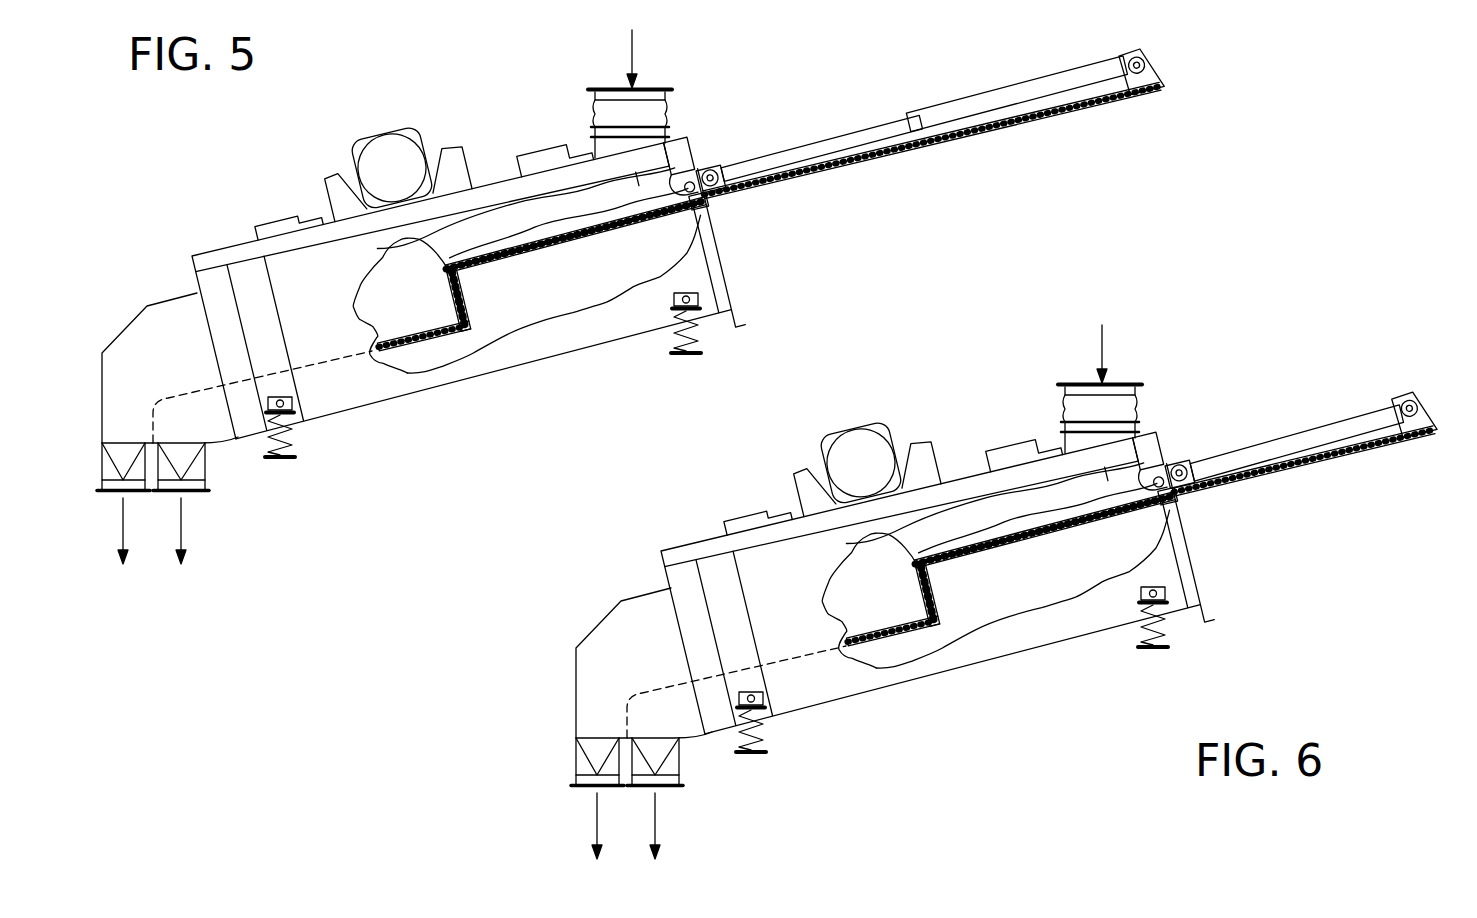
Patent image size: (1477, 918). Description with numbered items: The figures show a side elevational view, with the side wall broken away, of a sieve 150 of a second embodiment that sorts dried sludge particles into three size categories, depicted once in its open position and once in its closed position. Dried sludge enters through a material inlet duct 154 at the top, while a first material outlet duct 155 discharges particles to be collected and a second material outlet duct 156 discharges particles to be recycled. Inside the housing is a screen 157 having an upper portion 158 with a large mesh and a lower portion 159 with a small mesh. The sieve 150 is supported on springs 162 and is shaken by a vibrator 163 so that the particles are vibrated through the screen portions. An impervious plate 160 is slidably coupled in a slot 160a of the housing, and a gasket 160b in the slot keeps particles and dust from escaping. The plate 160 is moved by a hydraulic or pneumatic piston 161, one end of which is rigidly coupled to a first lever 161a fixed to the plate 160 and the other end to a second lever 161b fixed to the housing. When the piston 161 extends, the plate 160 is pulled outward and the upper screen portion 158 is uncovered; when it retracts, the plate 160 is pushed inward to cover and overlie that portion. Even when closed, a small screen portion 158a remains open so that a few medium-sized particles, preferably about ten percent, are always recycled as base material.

In FIG. 5, the sieve 150 is at (226, 201).
In FIG. 6, the sieve 150 is at (636, 549).
In FIG. 5, the material inlet duct 154 is at (658, 90).
In FIG. 6, the material inlet duct 154 is at (1126, 388).
In FIG. 5, the first material outlet duct 155 is at (97, 468).
In FIG. 6, the first material outlet duct 155 is at (576, 762).
In FIG. 5, the second material outlet duct 156 is at (208, 468).
In FIG. 6, the second material outlet duct 156 is at (682, 770).
In FIG. 5, the screen 157 is at (486, 293).
In FIG. 6, the screen 157 is at (962, 586).
In FIG. 5, the upper screen portion 158 is at (545, 252).
In FIG. 6, the upper screen portion 158 is at (1036, 540).
In FIG. 5, the small screen portion 158a is at (376, 249).
In FIG. 6, the small screen portion 158a is at (870, 541).
In FIG. 5, the lower screen portion 159 is at (362, 320).
In FIG. 6, the lower screen portion 159 is at (833, 620).
In FIG. 5, the plate 160 is at (848, 160).
In FIG. 6, the plate 160 is at (982, 505).
In FIG. 5, the slot 160a is at (712, 203).
In FIG. 6, the slot 160a is at (1188, 497).
In FIG. 5, the gasket 160b is at (697, 170).
In FIG. 6, the gasket 160b is at (1165, 468).
In FIG. 5, the piston 161 is at (905, 116).
In FIG. 6, the piston 161 is at (1333, 412).
In FIG. 5, the first lever 161a is at (719, 172).
In FIG. 6, the first lever 161a is at (1189, 470).
In FIG. 5, the second lever 161b is at (1123, 72).
In FIG. 6, the second lever 161b is at (1418, 400).
In FIG. 5, the springs 162 is at (296, 455).
In FIG. 6, the springs 162 is at (768, 746).
In FIG. 5, the vibrator 163 is at (400, 150).
In FIG. 6, the vibrator 163 is at (870, 445).